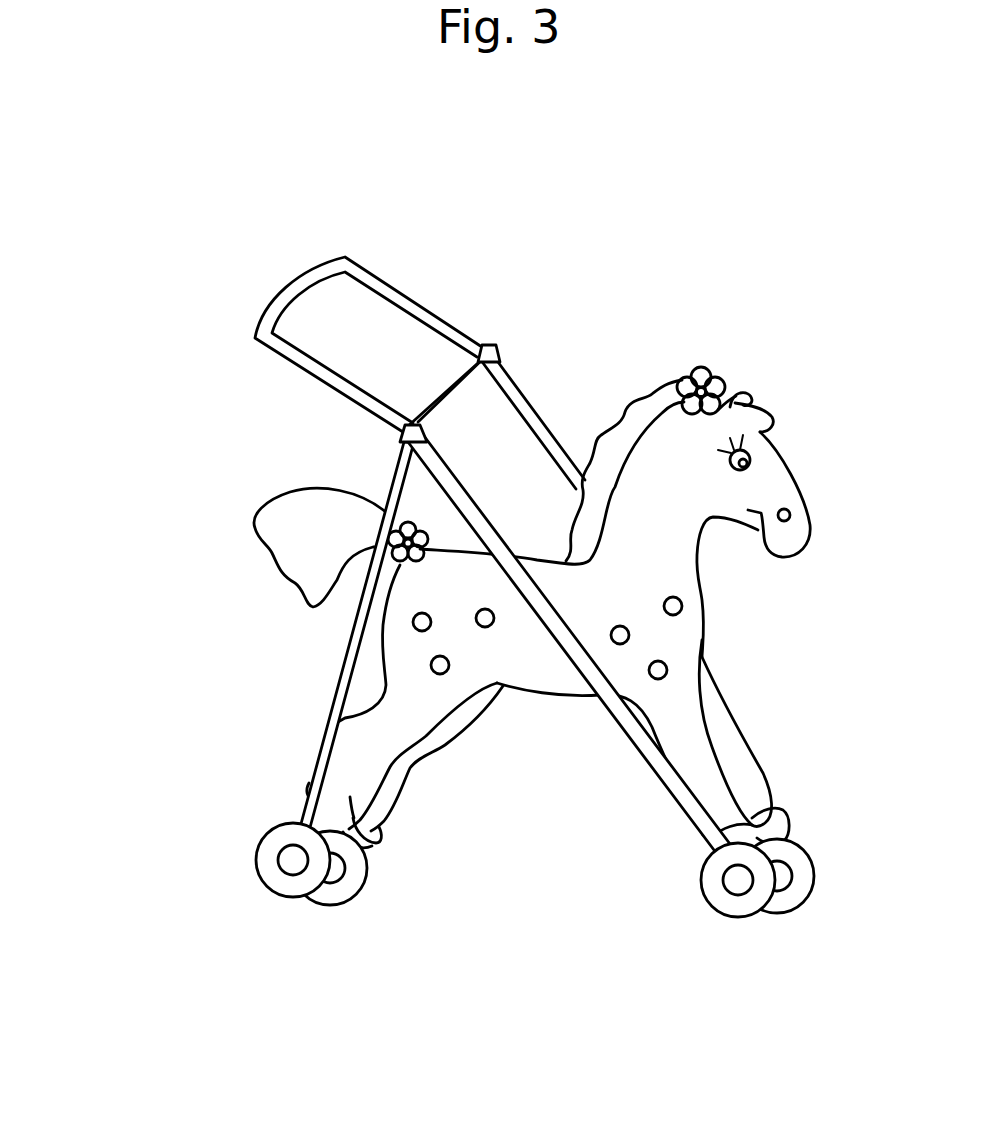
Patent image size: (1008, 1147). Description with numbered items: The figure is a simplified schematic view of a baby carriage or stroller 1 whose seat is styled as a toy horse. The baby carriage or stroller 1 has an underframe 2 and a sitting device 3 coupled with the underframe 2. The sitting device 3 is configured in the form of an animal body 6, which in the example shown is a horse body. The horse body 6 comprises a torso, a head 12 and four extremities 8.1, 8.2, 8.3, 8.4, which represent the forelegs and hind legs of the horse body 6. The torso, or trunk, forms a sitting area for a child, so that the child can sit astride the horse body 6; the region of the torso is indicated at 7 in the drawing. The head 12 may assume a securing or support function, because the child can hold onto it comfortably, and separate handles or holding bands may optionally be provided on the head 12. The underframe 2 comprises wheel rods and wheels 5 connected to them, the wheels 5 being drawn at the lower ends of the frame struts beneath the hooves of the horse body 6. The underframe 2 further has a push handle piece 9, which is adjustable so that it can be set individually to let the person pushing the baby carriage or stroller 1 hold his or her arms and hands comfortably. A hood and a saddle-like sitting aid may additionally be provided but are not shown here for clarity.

The baby carriage or stroller 1 is at (104, 272).
The underframe 2 is at (347, 670).
The sitting device 3 is at (553, 577).
The wheels 5 is at (340, 893).
The animal body 6 is at (770, 625).
The seat body 7 is at (525, 660).
The extremity 8.1 is at (733, 743).
The extremity 8.2 is at (712, 792).
The extremity 8.3 is at (397, 793).
The extremity 8.4 is at (377, 843).
The push handle piece 9 is at (317, 267).
The head 12 is at (740, 395).